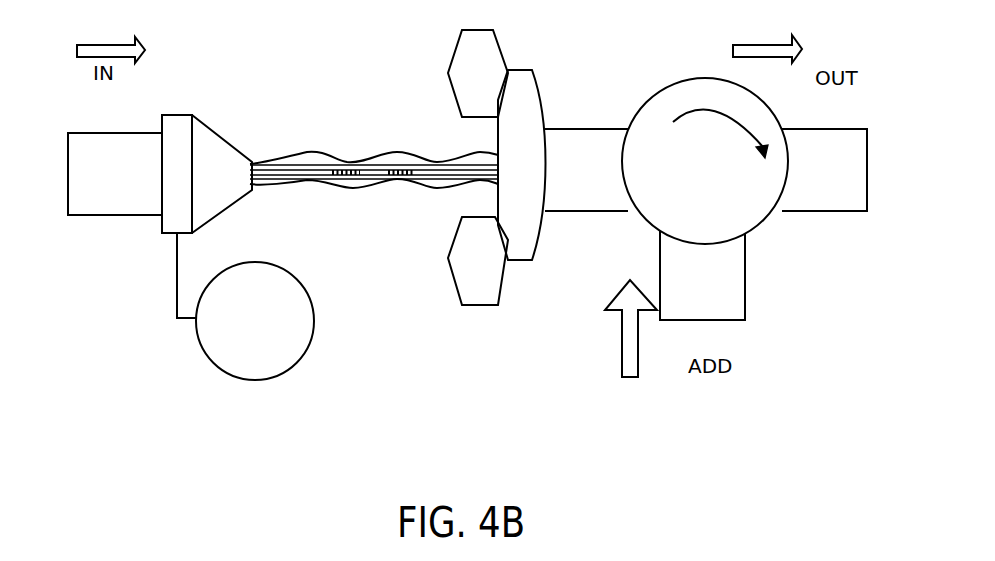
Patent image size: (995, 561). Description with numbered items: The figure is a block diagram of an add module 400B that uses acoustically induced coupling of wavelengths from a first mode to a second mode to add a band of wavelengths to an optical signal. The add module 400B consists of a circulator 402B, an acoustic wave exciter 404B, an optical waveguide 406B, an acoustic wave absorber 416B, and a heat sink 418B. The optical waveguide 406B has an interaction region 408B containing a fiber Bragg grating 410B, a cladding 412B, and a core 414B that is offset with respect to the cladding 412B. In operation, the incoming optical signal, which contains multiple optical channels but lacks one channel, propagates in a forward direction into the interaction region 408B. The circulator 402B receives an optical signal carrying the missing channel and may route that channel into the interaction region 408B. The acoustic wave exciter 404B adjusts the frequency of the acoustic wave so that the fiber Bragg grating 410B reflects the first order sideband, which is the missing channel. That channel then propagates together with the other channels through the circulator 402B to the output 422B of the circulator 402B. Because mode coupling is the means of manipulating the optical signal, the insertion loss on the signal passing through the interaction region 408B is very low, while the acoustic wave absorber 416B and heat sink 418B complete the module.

The add module 400B is at (516, 455).
The circulator 402B is at (725, 210).
The acoustic wave exciter 404B is at (318, 344).
The optical waveguide 406B is at (118, 115).
The interaction region 408B is at (330, 136).
The fiber Bragg grating 410B is at (342, 176).
The cladding 412B is at (268, 181).
The core 414B is at (433, 179).
The acoustic wave absorber 416B is at (527, 108).
The heat sink 418B is at (467, 60).
The output 422B is at (855, 165).